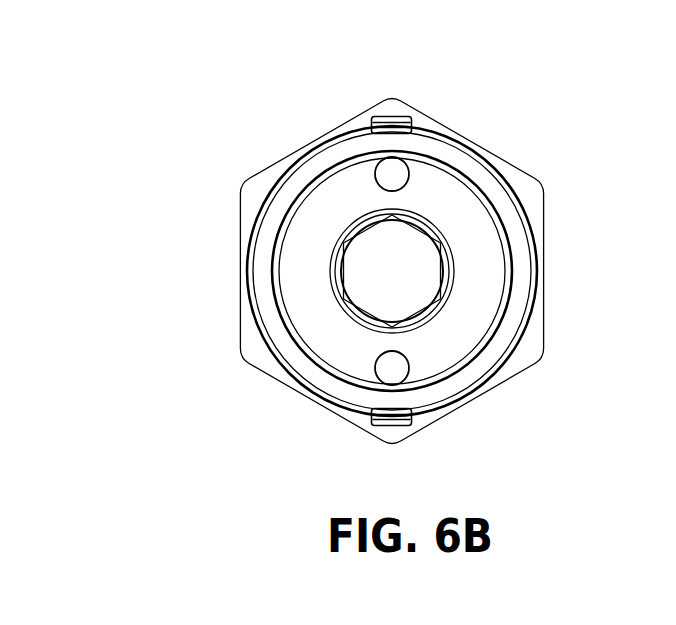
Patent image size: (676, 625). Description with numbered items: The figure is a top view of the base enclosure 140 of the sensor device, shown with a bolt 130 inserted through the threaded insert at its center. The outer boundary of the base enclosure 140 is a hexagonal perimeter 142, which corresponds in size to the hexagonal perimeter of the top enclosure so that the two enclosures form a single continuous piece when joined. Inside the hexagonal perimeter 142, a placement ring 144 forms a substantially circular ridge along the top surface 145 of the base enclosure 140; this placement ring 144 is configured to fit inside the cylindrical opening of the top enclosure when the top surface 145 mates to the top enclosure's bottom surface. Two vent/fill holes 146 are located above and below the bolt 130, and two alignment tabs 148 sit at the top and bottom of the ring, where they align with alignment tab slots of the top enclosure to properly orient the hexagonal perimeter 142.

The base enclosure 140 is at (417, 247).
The hexagonal perimeter 142 is at (276, 162).
The placement ring 144 is at (528, 225).
The top surface 145 is at (247, 348).
The vent/fill holes 146 is at (376, 168).
The alignment tabs 148 is at (411, 124).
The bolt 130 is at (418, 217).